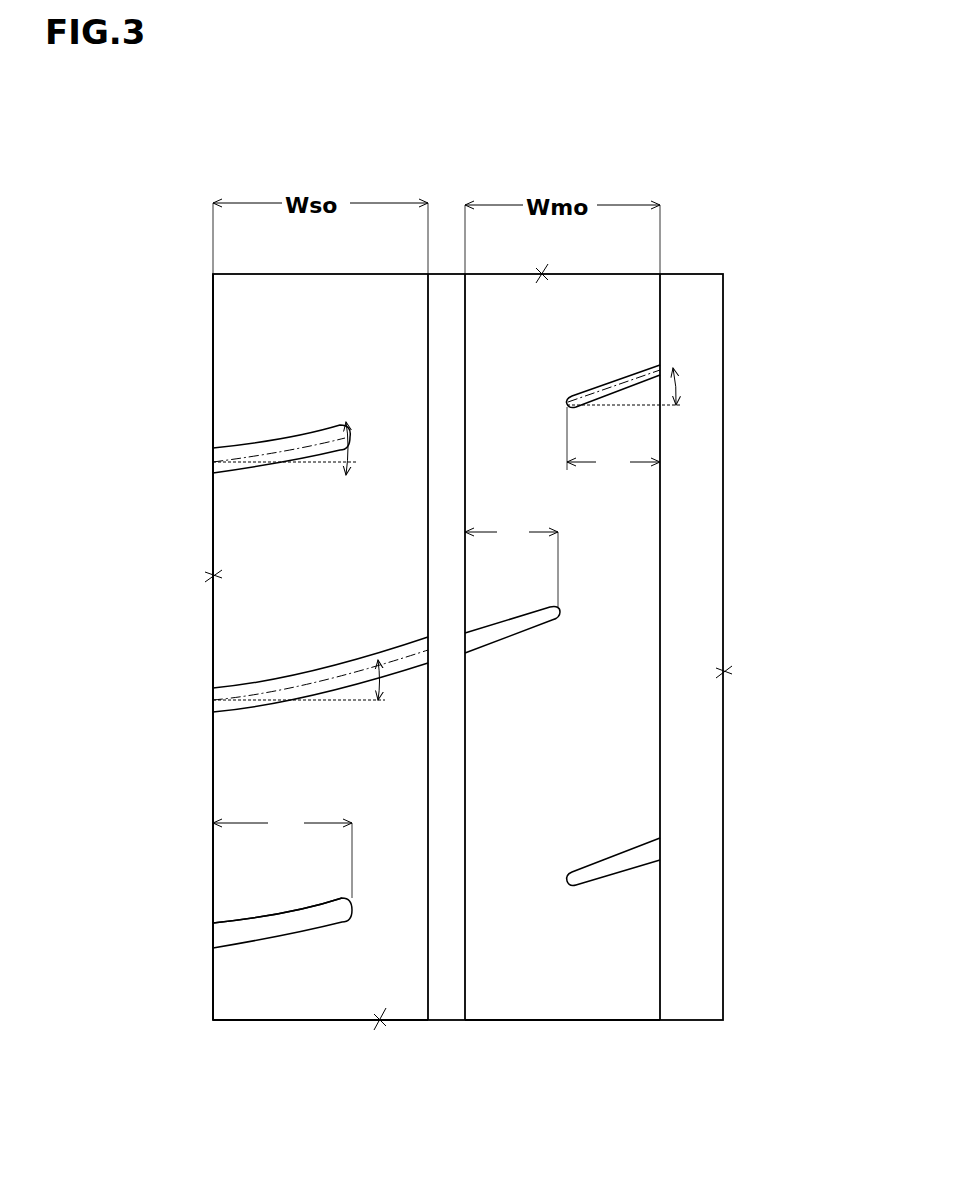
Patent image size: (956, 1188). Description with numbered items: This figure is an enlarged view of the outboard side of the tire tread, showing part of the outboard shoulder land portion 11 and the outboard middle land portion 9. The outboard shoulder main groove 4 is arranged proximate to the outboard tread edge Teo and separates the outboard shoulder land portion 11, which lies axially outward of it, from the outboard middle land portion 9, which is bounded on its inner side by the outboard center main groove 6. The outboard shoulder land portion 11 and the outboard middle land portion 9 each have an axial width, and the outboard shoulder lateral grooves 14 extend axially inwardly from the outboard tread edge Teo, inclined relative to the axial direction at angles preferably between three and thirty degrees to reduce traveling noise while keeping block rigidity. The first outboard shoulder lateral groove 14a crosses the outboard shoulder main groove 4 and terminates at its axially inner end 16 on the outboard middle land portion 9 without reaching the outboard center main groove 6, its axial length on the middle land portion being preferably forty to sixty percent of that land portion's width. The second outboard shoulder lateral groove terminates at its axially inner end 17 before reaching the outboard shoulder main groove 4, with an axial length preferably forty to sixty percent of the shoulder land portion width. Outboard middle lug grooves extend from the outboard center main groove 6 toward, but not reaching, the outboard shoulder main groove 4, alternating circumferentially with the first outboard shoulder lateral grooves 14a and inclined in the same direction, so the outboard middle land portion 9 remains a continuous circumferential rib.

The outboard shoulder main groove 4 is at (447, 293).
The outboard center main groove 6 is at (688, 298).
The outboard middle land portion 9 is at (558, 982).
The outboard shoulder land portion 11 is at (302, 990).
The outboard shoulder lateral grooves 14 is at (100, 640).
The first outboard shoulder lateral groove 14a is at (243, 690).
The axially inner end 16 is at (562, 607).
The axially inner end 17 is at (352, 908).
The outboard tread edge Teo is at (213, 322).